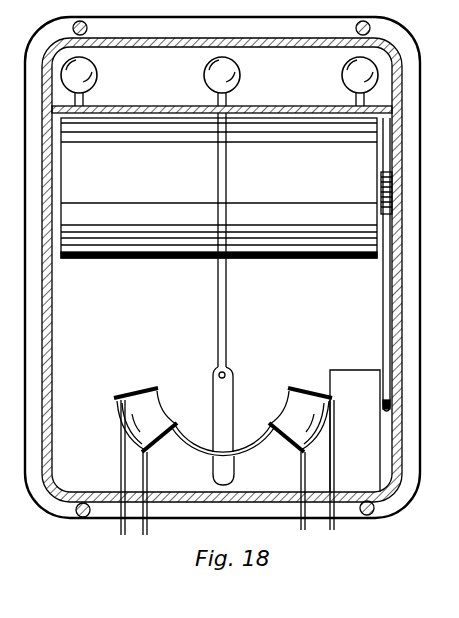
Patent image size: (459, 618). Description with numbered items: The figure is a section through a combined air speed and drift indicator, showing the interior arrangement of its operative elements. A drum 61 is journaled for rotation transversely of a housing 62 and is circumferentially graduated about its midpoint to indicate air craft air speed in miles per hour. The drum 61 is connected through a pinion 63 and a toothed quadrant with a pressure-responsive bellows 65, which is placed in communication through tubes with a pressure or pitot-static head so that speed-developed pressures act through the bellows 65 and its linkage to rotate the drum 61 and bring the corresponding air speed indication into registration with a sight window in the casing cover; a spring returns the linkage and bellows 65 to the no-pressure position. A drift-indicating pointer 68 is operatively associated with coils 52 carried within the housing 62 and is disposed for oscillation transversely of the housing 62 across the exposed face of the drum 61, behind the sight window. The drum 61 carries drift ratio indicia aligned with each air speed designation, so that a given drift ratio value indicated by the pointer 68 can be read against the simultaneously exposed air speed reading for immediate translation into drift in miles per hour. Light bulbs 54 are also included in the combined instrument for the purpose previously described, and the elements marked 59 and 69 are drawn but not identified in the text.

The coils 52 is at (155, 405).
The light bulbs 54 is at (97, 76).
The central ball 59 is at (240, 75).
The drum 61 is at (126, 246).
The housing 62 is at (401, 245).
The pinion 63 is at (390, 176).
The pressure-responsive bellows 65 is at (353, 376).
The drift-indicating pointer 68 is at (227, 313).
The tube 69 is at (388, 214).